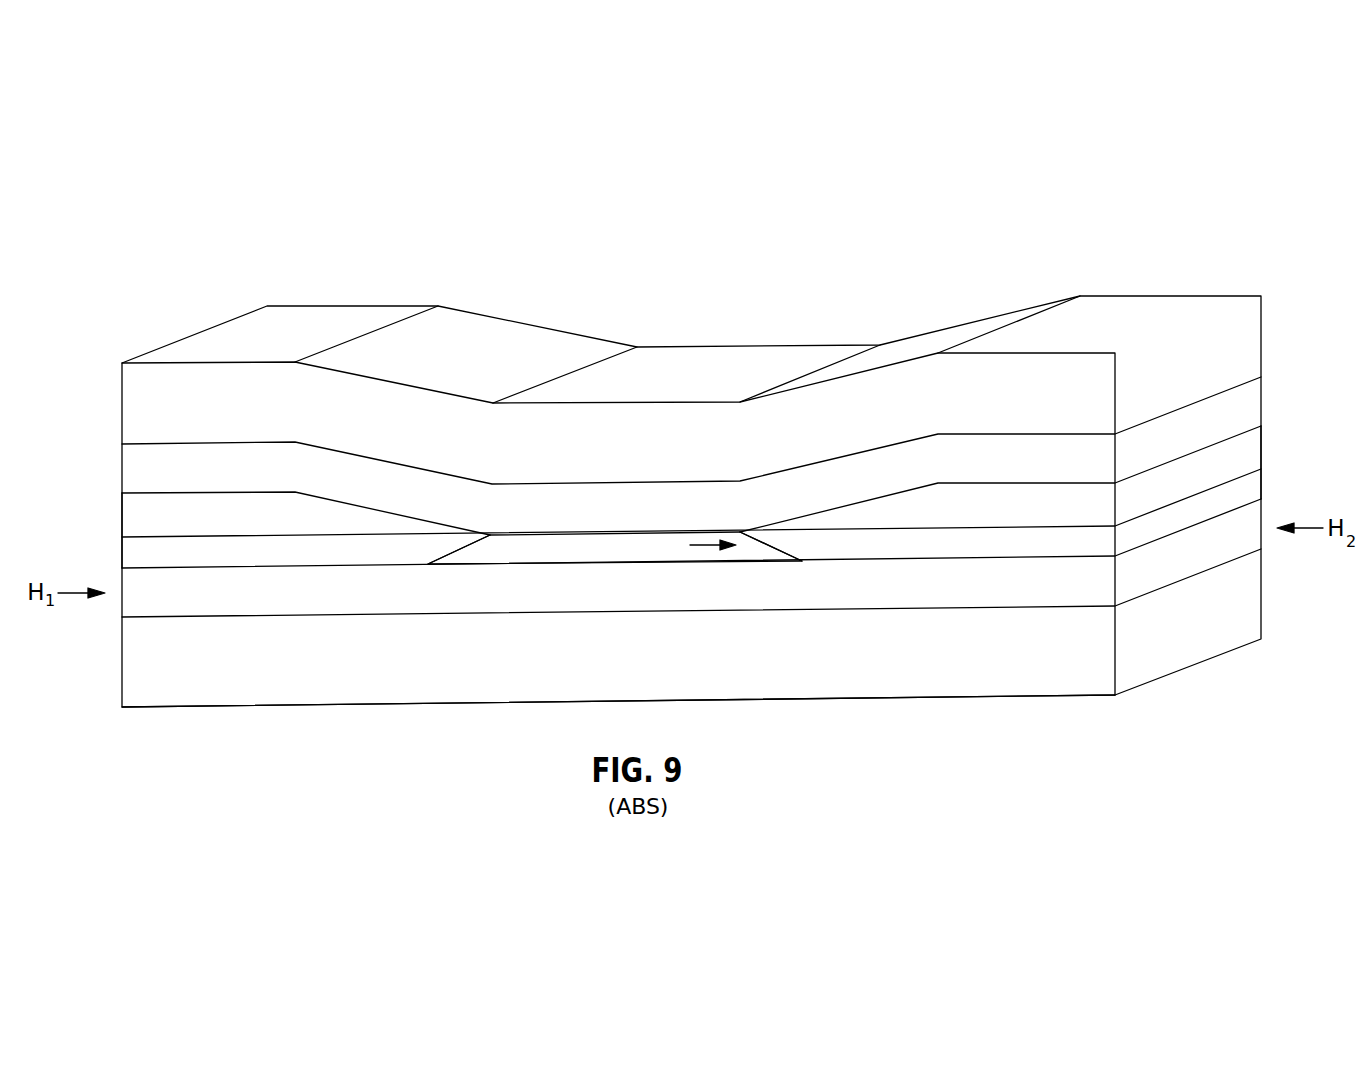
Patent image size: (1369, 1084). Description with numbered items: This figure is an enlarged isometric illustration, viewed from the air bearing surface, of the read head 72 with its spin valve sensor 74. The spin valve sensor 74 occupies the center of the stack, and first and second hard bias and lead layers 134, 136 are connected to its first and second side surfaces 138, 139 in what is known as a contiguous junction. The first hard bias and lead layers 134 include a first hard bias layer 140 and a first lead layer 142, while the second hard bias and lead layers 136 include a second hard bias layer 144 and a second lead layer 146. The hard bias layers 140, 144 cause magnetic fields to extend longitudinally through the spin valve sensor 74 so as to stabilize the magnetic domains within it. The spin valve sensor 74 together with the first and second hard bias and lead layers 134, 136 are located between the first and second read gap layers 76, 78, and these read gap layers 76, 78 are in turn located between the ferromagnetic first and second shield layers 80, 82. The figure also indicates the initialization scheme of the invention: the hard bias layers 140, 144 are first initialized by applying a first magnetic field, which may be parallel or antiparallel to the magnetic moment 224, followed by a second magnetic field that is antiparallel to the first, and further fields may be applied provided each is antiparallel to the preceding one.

The read head 72 is at (792, 290).
The spin valve sensor 74 is at (530, 519).
The first read gap layer 76 is at (407, 605).
The second read gap layer 78 is at (358, 470).
The first shield layer 80 is at (291, 684).
The second shield layer 82 is at (547, 338).
The first hard bias and lead layers 134 is at (118, 495).
The second hard bias and lead layers 136 is at (1270, 425).
The first side surface 138 is at (436, 559).
The second side surface 139 is at (790, 556).
The first hard bias layer 140 is at (163, 555).
The first lead layer 142 is at (163, 503).
The second hard bias layer 144 is at (1065, 545).
The second lead layer 146 is at (1065, 492).
The magnetic moment 224 is at (702, 545).